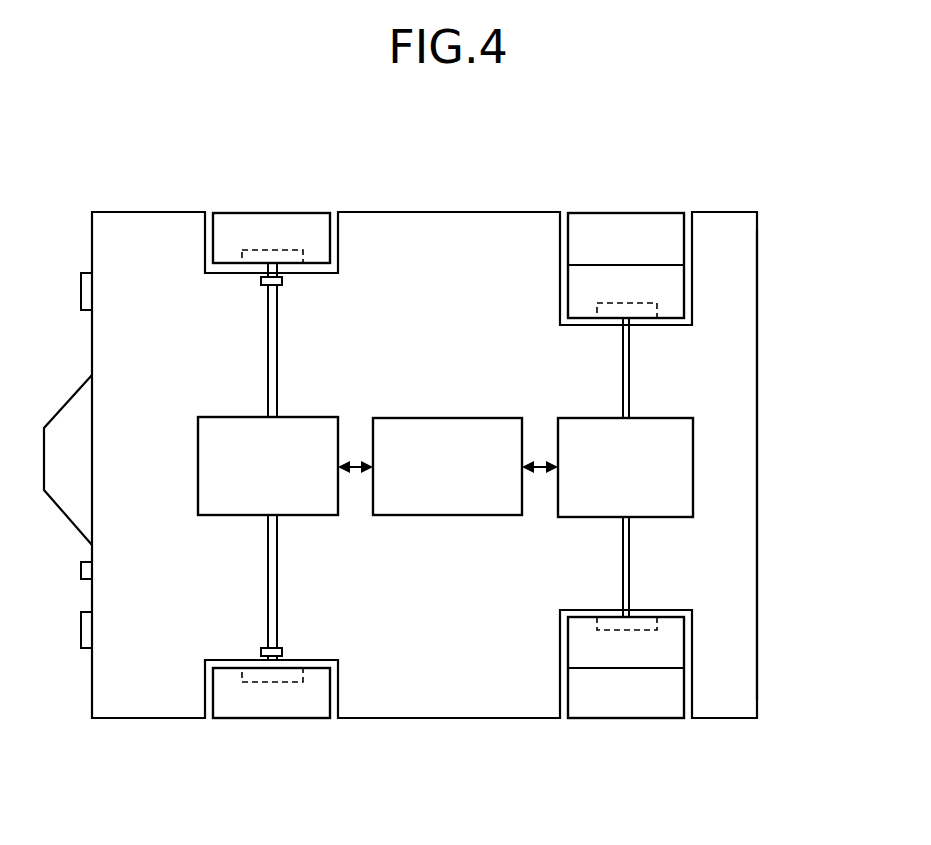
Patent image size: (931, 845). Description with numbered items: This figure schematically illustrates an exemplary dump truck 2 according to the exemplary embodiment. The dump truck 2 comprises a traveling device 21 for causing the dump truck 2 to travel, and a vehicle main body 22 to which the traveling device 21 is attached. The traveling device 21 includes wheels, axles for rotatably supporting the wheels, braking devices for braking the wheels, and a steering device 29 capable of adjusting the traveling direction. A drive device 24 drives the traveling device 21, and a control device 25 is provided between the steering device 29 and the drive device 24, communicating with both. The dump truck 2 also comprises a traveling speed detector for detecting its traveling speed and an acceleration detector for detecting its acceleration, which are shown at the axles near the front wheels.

The dump truck 2 is at (748, 183).
The traveling device 21 is at (195, 205).
The vehicle main body 22 is at (765, 258).
The drive device 24 is at (657, 418).
The control device 25 is at (482, 418).
The steering device 29 is at (303, 417).